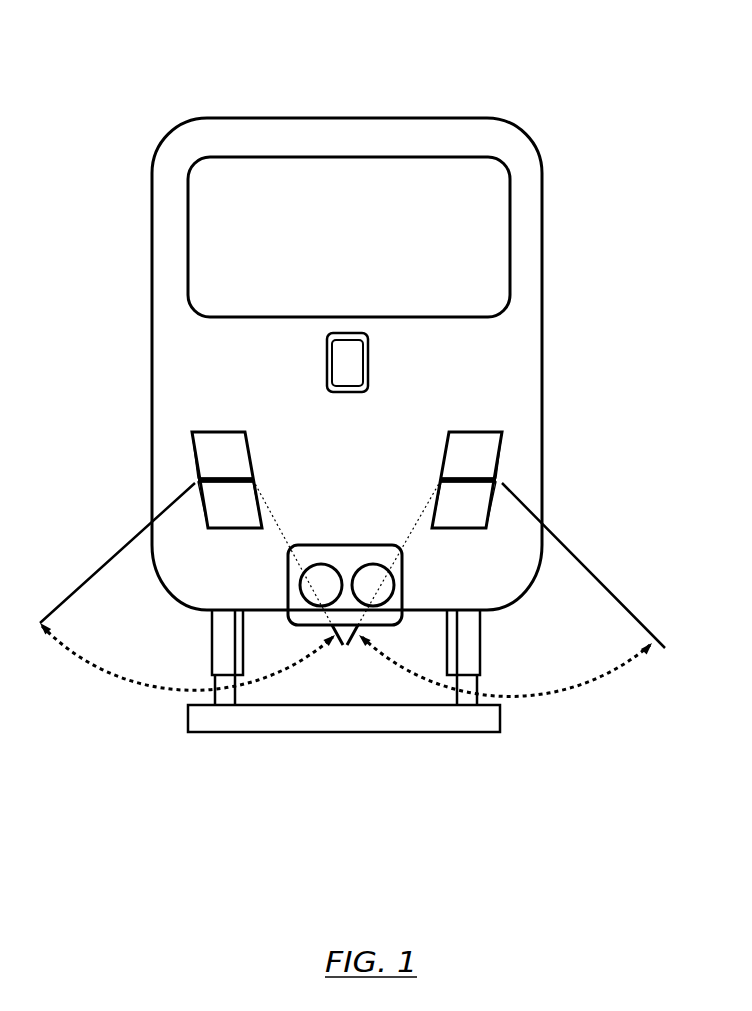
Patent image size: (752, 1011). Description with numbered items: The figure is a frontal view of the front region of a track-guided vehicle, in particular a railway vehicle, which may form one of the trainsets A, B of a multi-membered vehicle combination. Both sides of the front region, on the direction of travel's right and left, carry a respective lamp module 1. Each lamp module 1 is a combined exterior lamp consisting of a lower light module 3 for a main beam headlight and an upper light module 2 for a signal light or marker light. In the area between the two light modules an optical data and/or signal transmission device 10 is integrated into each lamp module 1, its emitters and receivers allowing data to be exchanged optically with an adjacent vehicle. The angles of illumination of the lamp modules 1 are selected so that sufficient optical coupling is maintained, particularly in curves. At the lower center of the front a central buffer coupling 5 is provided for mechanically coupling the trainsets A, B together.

The lamp module 1 is at (207, 433).
The upper light module 2 is at (223, 458).
The lower light module 3 is at (238, 498).
The optical data and/or signal transmission device 10 is at (222, 479).
The central buffer coupling 5 is at (345, 607).
The trainset A is at (418, 376).
The trainset B is at (502, 145).